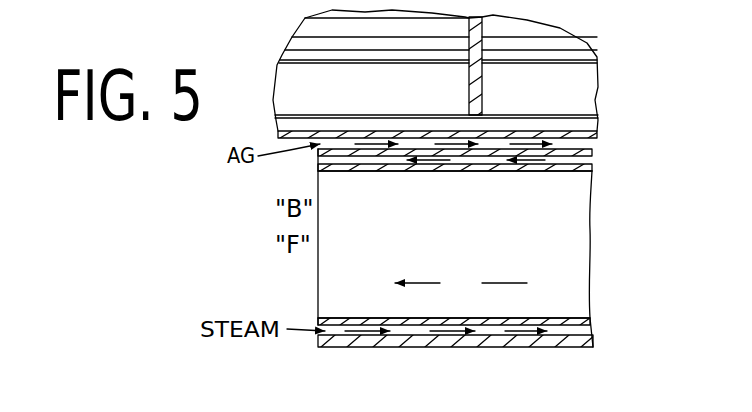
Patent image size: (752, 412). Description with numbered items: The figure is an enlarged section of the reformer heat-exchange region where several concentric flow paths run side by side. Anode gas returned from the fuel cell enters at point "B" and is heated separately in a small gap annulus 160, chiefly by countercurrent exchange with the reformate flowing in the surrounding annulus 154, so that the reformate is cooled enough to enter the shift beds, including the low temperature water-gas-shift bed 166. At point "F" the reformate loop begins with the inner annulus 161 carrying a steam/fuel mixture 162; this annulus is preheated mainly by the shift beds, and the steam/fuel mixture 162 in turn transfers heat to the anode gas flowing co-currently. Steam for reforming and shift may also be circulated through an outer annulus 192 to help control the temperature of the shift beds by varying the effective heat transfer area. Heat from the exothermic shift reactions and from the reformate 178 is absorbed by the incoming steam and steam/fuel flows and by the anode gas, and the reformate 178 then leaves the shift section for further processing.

The surrounding annulus 154 is at (580, 205).
The small gap annulus 160 is at (592, 147).
The inner annulus 161 is at (592, 160).
The steam/fuel mixture 162 is at (320, 160).
The low temperature water-gas-shift bed 166 is at (480, 229).
The reformate 178 is at (461, 284).
The outer annulus 192 is at (590, 332).